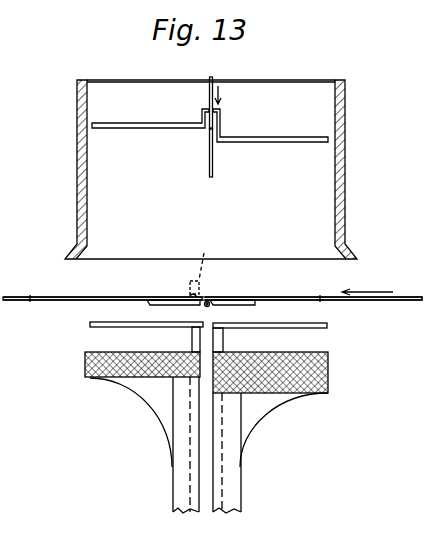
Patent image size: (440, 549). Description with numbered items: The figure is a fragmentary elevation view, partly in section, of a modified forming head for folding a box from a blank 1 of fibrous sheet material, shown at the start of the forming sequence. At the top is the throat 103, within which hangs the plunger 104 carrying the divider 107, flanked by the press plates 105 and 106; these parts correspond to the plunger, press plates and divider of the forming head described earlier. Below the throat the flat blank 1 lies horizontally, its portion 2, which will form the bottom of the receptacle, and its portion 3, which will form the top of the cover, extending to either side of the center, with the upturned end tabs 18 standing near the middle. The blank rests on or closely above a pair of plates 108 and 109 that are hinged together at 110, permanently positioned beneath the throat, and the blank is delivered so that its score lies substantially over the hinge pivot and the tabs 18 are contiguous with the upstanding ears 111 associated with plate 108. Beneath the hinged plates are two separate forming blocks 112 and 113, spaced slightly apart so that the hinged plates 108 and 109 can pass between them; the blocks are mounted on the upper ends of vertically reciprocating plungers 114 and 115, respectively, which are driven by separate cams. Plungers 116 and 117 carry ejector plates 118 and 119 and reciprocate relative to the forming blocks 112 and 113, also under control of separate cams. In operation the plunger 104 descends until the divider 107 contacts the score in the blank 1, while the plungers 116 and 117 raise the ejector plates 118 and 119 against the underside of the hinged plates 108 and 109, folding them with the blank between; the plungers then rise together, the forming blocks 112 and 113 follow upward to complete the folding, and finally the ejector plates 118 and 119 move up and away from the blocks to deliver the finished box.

The blank 1 is at (70, 305).
The bottom portion of receptacle 2 is at (280, 297).
The top portion of cover 3 is at (110, 297).
The end tabs 18 is at (203, 265).
The throat 103 is at (310, 193).
The plunger 104 is at (213, 82).
The press plate 105 is at (138, 124).
The press plate 106 is at (309, 136).
The divider 107 is at (213, 163).
The hinged plate 108 is at (172, 294).
The hinged plate 109 is at (215, 300).
The hinge 110 is at (212, 307).
The upstanding ears 111 is at (195, 302).
The forming block 112 is at (85, 377).
The forming block 113 is at (328, 373).
The vertically reciprocating plunger 114 is at (172, 478).
The vertically reciprocating plunger 115 is at (241, 478).
The plunger 116 is at (185, 344).
The plunger 117 is at (223, 341).
The ejector plate 118 is at (128, 328).
The ejector plate 119 is at (296, 336).